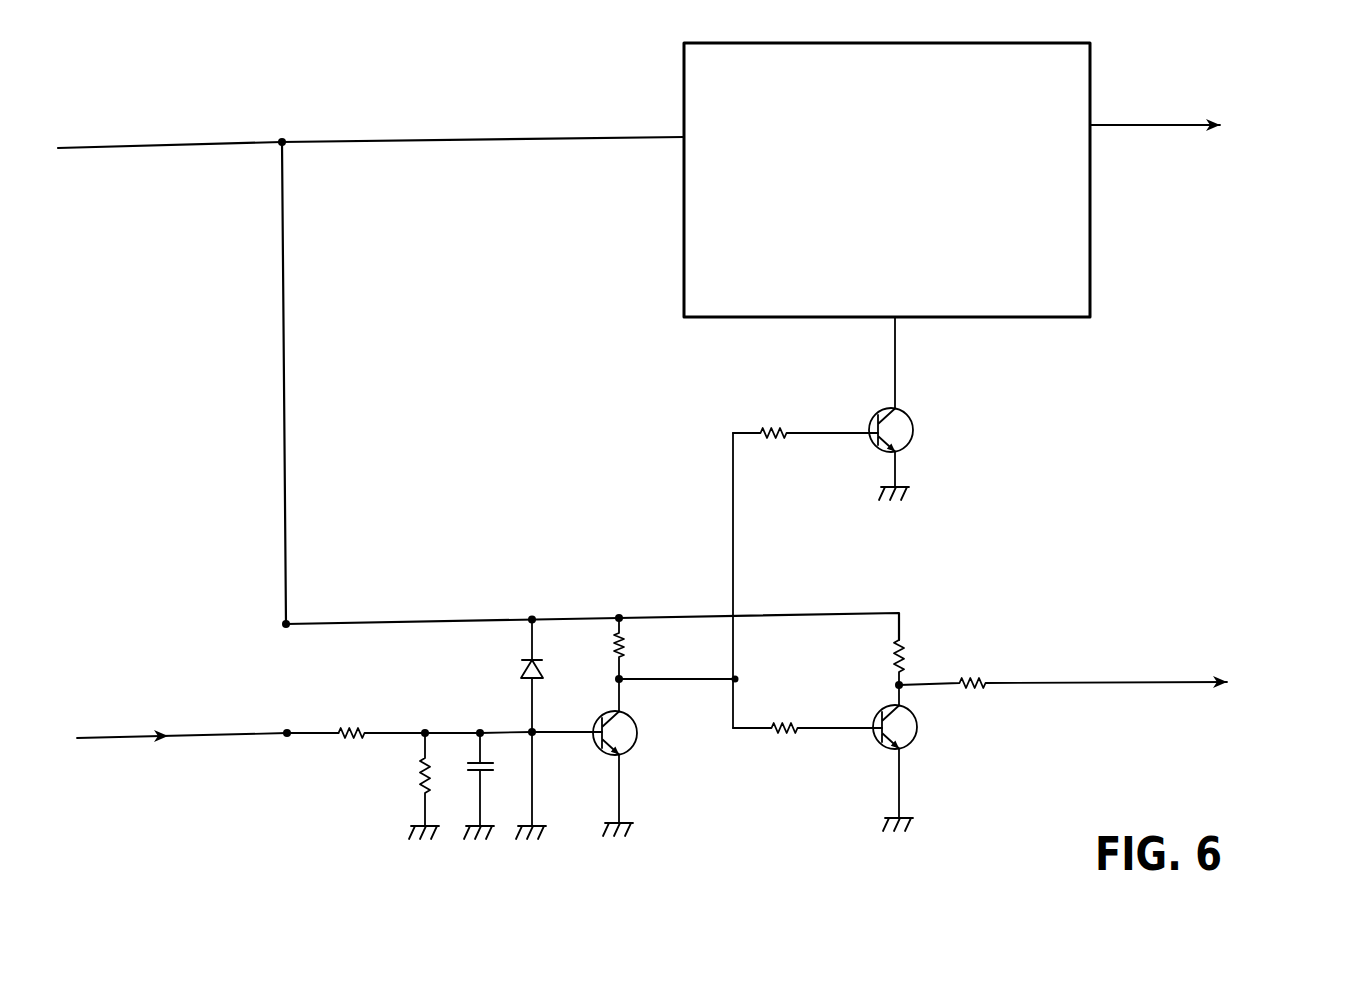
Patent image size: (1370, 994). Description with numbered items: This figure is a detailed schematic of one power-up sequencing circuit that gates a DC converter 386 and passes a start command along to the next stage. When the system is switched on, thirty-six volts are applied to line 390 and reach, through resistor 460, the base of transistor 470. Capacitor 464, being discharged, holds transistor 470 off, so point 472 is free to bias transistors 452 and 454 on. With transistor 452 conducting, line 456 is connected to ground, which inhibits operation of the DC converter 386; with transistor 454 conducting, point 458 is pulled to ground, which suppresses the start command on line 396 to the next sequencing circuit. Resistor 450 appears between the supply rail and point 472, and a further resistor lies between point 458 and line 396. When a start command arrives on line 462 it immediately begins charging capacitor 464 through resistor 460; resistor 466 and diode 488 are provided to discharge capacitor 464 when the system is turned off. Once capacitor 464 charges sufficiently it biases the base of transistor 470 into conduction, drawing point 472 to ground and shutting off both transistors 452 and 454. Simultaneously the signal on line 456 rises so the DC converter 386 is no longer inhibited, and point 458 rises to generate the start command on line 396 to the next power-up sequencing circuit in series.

The DC converter 386 is at (1091, 70).
The line 390 is at (303, 622).
The line 396 is at (1040, 682).
The resistor 450 is at (632, 638).
The transistor 452 is at (915, 438).
The transistor 454 is at (918, 727).
The line 456 is at (898, 377).
The point 458 is at (903, 683).
The resistor 460 is at (338, 724).
The line 462 is at (131, 738).
The capacitor 464 is at (466, 773).
The resistor 466 is at (414, 775).
The transistor 470 is at (634, 744).
The point 472 is at (745, 678).
The diode 488 is at (523, 668).